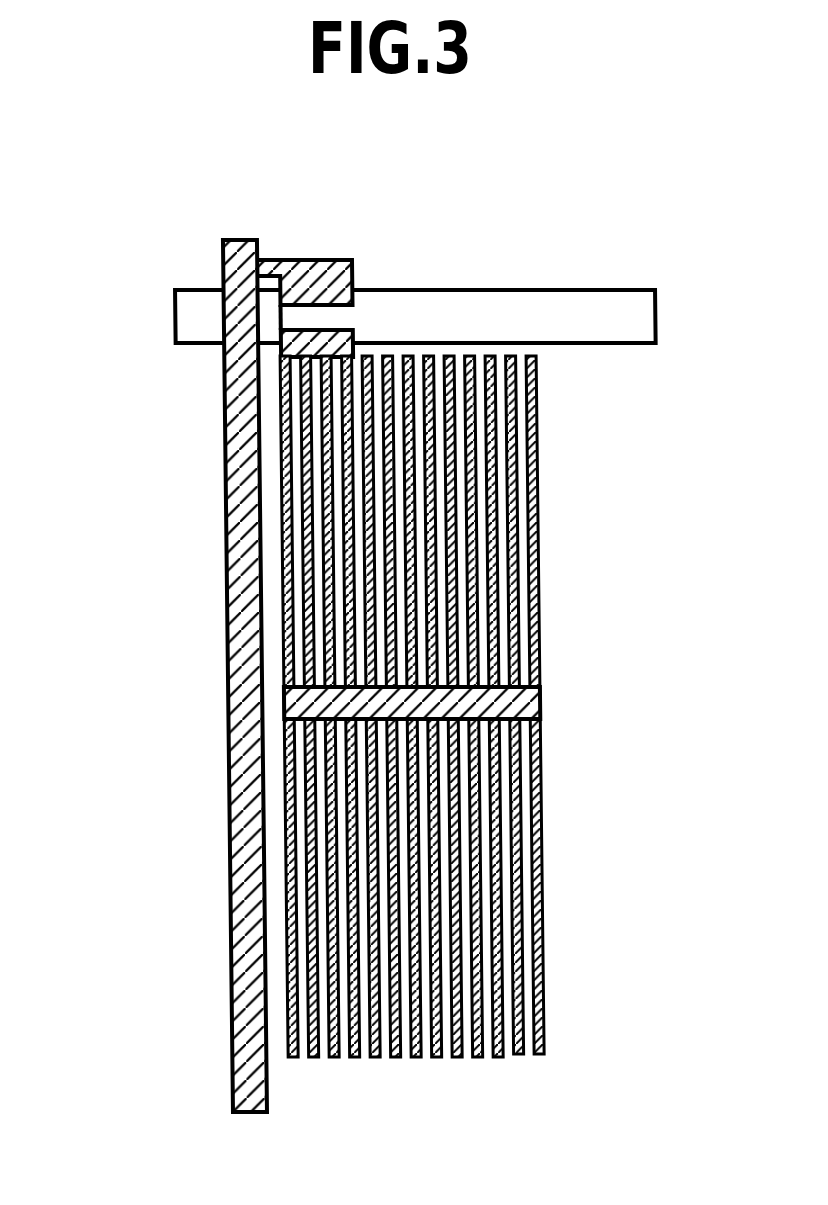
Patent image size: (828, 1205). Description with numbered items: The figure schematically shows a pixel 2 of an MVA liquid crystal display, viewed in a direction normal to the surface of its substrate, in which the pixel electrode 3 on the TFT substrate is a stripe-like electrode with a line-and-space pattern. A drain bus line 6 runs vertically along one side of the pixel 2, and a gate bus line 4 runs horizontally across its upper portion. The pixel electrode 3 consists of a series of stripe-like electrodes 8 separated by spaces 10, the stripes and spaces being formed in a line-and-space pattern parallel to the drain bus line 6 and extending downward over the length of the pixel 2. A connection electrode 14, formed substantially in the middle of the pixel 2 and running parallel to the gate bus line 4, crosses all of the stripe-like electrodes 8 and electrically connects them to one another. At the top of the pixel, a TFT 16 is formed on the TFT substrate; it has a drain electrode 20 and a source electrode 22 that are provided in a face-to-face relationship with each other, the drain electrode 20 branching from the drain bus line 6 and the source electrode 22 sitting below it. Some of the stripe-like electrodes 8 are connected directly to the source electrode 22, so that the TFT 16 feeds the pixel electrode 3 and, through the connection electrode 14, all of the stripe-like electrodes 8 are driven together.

The pixel 2 is at (142, 265).
The pixel electrode 3 is at (478, 743).
The gate bus line 4 is at (615, 290).
The drain bus line 6 is at (228, 642).
The stripe-like electrode 8 is at (500, 1050).
The space 10 is at (507, 1047).
The connection electrode 14 is at (538, 672).
The TFT 16 is at (388, 278).
The drain electrode 20 is at (352, 268).
The source electrode 22 is at (352, 333).